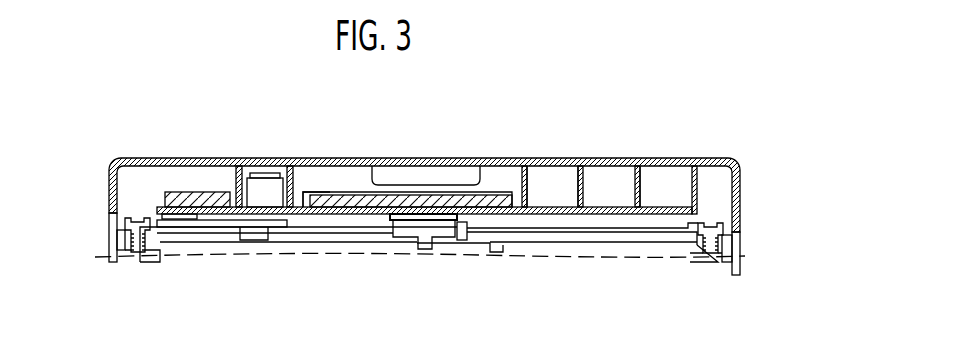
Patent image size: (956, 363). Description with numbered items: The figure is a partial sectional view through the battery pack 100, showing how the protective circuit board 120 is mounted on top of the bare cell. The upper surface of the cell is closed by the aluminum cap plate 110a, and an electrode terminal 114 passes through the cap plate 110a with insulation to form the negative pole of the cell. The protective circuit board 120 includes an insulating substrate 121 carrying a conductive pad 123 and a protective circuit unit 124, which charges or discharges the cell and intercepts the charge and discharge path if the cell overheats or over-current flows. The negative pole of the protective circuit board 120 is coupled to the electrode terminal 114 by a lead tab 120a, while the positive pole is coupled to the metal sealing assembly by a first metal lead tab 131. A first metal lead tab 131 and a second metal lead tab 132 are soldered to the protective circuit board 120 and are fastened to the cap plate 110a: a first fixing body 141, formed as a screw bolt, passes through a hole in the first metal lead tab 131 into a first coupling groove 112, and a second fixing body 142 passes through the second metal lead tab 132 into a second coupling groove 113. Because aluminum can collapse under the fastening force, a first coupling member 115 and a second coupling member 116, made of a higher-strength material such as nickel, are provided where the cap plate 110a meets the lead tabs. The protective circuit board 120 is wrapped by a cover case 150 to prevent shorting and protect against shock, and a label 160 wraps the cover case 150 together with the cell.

The battery pack 100 is at (90, 95).
The cap plate 110a is at (545, 233).
The first coupling groove 112 is at (713, 256).
The second coupling groove 113 is at (120, 262).
The electrode terminal 114 is at (425, 250).
The first coupling member 115 is at (705, 263).
The second coupling member 116 is at (140, 263).
The protective circuit board 120 is at (488, 190).
The lead tab 120a is at (343, 197).
The insulating substrate 121 is at (290, 213).
The conductive pad 123 is at (266, 185).
The protective circuit unit 124 is at (198, 190).
The first metal lead tab 131 is at (658, 216).
The second metal lead tab 132 is at (177, 221).
The first fixing body 141 is at (735, 218).
The second fixing body 142 is at (108, 222).
The cover case 150 is at (556, 159).
The label 160 is at (745, 241).